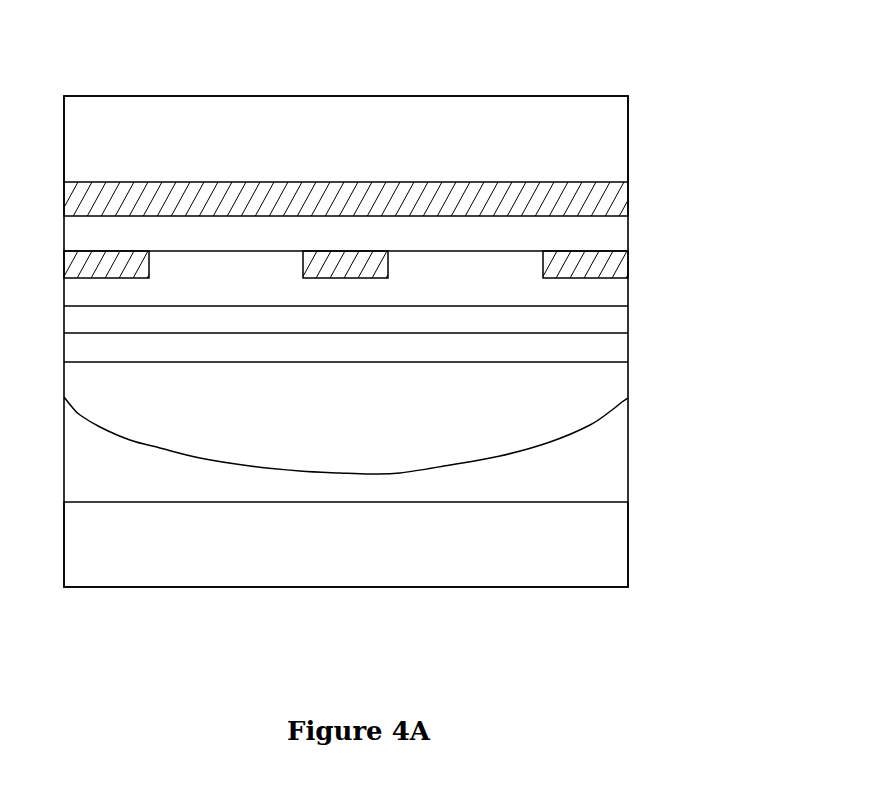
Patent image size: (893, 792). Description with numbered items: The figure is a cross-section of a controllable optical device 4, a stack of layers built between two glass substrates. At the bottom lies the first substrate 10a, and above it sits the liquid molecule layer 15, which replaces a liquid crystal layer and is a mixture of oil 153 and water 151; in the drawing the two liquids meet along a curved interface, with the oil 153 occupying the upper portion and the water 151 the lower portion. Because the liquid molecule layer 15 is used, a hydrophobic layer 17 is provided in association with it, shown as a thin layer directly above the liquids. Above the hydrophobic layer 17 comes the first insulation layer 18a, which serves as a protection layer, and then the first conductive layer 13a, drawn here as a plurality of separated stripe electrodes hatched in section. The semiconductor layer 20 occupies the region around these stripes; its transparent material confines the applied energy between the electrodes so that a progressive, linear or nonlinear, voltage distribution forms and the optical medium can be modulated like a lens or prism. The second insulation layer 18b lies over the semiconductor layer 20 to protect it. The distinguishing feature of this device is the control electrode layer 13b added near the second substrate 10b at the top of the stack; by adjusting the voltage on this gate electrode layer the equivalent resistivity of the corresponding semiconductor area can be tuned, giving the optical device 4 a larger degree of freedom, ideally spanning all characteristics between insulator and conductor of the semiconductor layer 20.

The controllable optical device 4 is at (669, 78).
The second substrate 10b is at (346, 139).
The control electrode layer 13b is at (592, 192).
The second insulation layer 18b is at (593, 229).
The first conductive layer 13a is at (605, 258).
The semiconductor layer 20 is at (469, 291).
The first insulation layer 18a is at (605, 317).
The hydrophobic layer 17 is at (605, 350).
The liquid molecule layer 15 is at (386, 436).
The oil 153 is at (349, 422).
The water 151 is at (346, 442).
The first substrate 10a is at (364, 557).